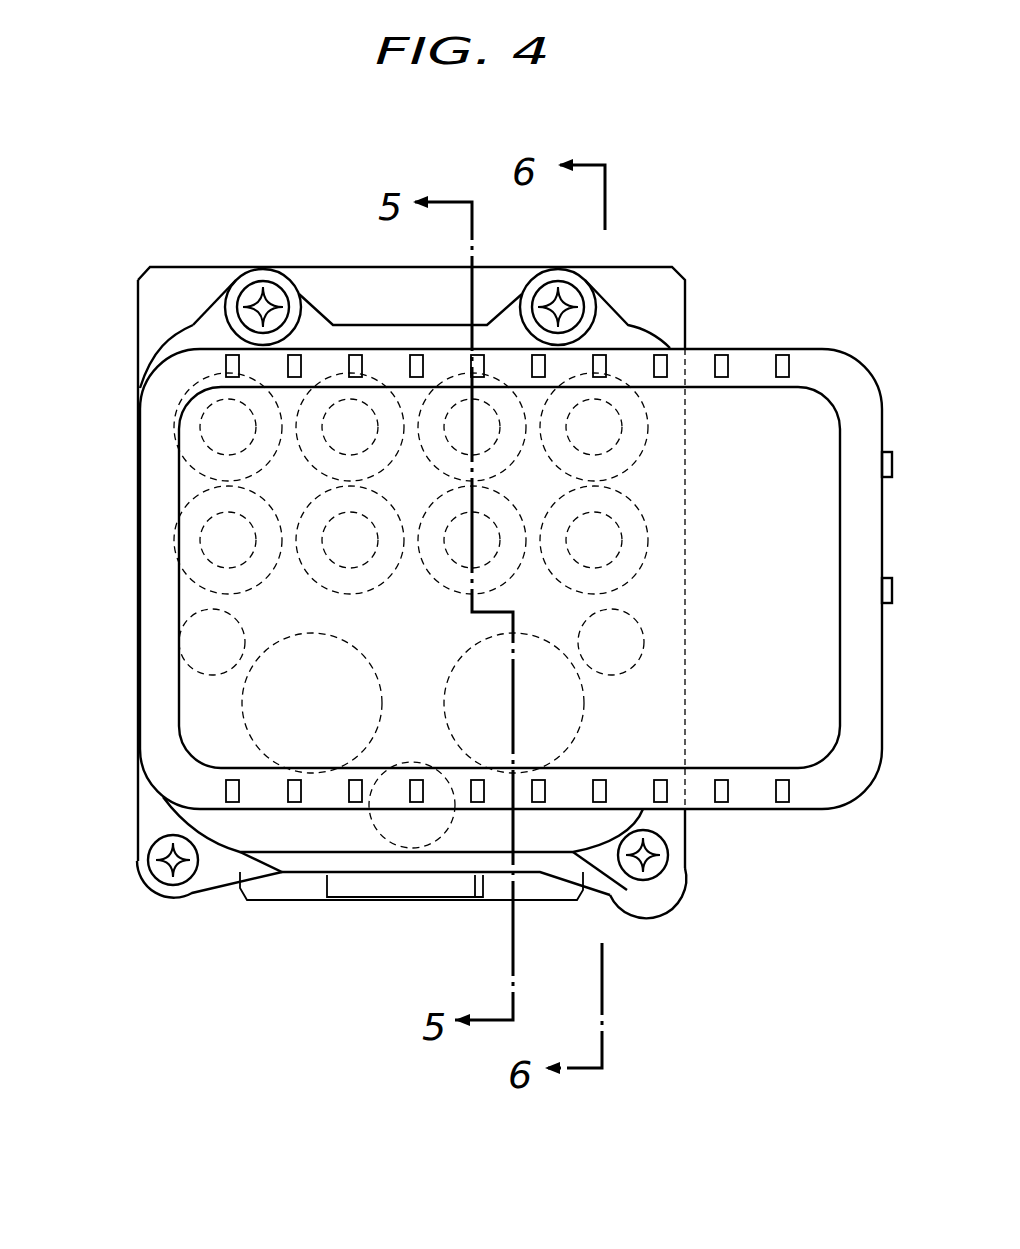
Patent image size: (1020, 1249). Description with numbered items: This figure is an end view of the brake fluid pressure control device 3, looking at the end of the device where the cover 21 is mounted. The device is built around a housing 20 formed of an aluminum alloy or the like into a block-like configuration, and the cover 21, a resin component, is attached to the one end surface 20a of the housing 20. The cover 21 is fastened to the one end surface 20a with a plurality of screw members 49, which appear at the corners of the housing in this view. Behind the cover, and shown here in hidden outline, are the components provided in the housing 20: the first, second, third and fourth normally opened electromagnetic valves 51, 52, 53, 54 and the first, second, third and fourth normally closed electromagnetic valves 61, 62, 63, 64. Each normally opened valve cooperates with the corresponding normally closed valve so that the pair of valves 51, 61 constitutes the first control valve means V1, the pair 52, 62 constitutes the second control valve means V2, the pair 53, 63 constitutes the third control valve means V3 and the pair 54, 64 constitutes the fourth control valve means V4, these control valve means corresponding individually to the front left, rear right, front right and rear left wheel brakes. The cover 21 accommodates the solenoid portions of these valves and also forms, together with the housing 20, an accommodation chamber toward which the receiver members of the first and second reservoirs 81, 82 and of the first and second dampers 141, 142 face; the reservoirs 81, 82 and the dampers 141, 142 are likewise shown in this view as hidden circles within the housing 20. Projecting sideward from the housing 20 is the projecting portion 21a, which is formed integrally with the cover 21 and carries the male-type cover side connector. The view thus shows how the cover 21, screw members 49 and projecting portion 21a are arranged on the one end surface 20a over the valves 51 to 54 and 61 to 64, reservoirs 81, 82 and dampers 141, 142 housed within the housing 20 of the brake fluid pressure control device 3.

The brake fluid pressure control device 3 is at (676, 266).
The housing 20 is at (686, 320).
The one end surface 20a is at (320, 276).
The cover 21 is at (370, 995).
The projecting portion 21a is at (750, 810).
The screw member 49 is at (263, 285).
The first normally opened electromagnetic valve 51 is at (188, 385).
The second normally opened electromagnetic valve 52 is at (390, 383).
The third normally opened electromagnetic valve 53 is at (650, 440).
The fourth normally opened electromagnetic valve 54 is at (452, 380).
The first normally closed electromagnetic valve 61 is at (174, 538).
The second normally closed electromagnetic valve 62 is at (347, 593).
The third normally closed electromagnetic valve 63 is at (650, 525).
The fourth normally closed electromagnetic valve 64 is at (520, 594).
The first reservoir 81 is at (242, 713).
The second reservoir 82 is at (584, 704).
The first damper 141 is at (188, 665).
The second damper 142 is at (645, 650).
The first control valve means V1 is at (165, 483).
The second control valve means V2 is at (361, 594).
The third control valve means V3 is at (670, 530).
The fourth control valve means V4 is at (453, 598).